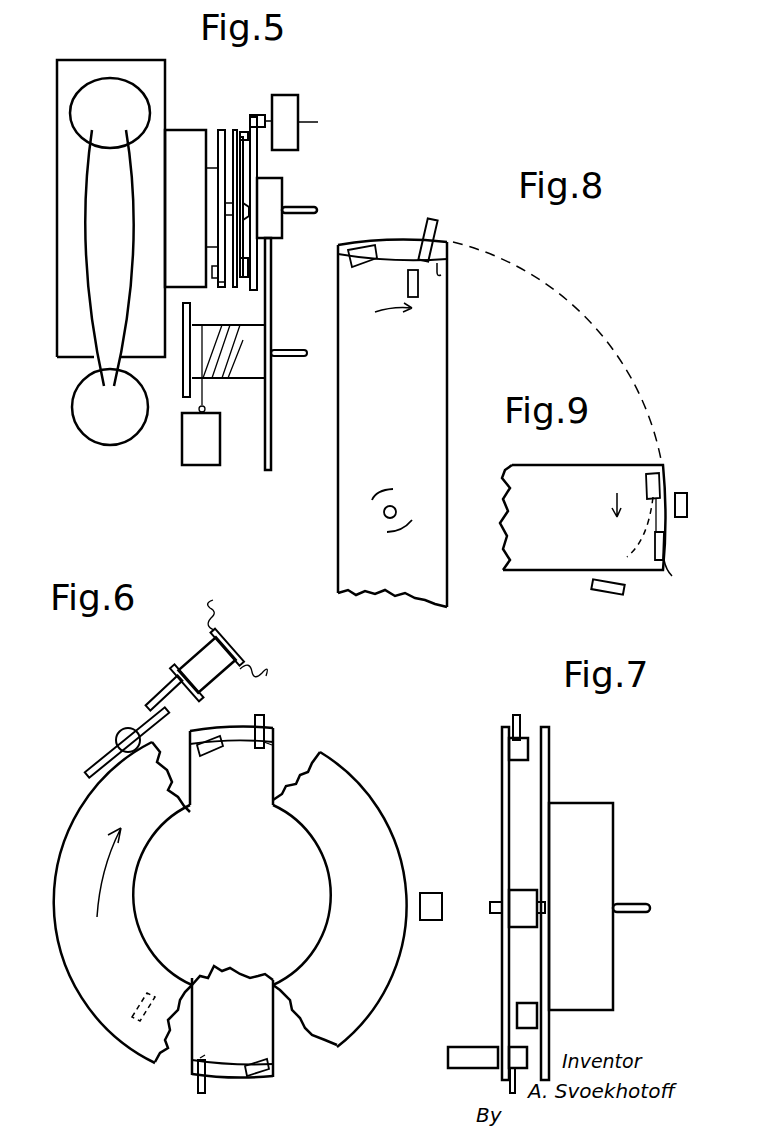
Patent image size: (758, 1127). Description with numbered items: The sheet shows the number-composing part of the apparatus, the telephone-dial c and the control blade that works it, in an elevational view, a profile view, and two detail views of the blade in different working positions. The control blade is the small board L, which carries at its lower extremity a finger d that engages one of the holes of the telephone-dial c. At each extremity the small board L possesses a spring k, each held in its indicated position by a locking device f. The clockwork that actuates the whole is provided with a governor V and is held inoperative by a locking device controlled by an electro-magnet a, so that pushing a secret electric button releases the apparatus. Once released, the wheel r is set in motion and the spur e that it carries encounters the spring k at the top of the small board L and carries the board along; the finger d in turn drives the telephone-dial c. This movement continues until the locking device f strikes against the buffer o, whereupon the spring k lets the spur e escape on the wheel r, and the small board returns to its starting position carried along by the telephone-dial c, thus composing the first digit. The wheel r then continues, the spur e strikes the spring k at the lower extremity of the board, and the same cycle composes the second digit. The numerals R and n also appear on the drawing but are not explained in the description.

In FIG. 5, the contact arm c is at (219, 130).
In FIG. 5, the lever plate L is at (236, 130).
In FIG. 8, the lever plate L is at (437, 384).
In FIG. 9, the lever plate L is at (542, 560).
In FIG. 6, the lever plate L is at (207, 730).
In FIG. 7, the lever plate L is at (501, 783).
In FIG. 5, the battery V is at (294, 104).
In FIG. 6, the battery V is at (126, 727).
In FIG. 5, the resistance rod R is at (256, 165).
In FIG. 5, the contact e is at (248, 270).
In FIG. 8, the contact e is at (418, 295).
In FIG. 9, the contact e is at (605, 596).
In FIG. 6, the contact e is at (130, 1014).
In FIG. 7, the contact e is at (538, 1010).
In FIG. 5, the contact spring d is at (224, 288).
In FIG. 5, the stop bar n is at (183, 392).
In FIG. 8, the pin f is at (431, 236).
In FIG. 9, the pin f is at (669, 577).
In FIG. 6, the pin f is at (265, 725).
In FIG. 7, the pin f is at (518, 720).
In FIG. 8, the notch k is at (447, 265).
In FIG. 9, the notch k is at (651, 521).
In FIG. 6, the notch k is at (276, 746).
In FIG. 9, the electromagnet o is at (678, 493).
In FIG. 6, the electromagnet o is at (423, 915).
In FIG. 6, the solenoid a is at (192, 667).
In FIG. 6, the ring r is at (76, 831).
In FIG. 7, the ring r is at (550, 777).